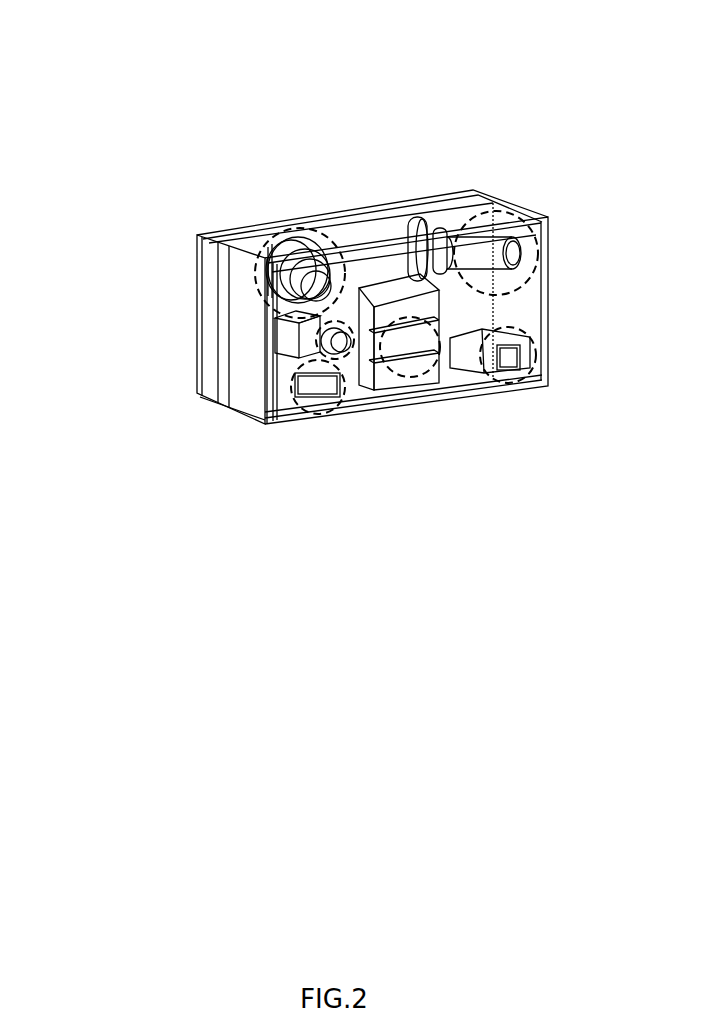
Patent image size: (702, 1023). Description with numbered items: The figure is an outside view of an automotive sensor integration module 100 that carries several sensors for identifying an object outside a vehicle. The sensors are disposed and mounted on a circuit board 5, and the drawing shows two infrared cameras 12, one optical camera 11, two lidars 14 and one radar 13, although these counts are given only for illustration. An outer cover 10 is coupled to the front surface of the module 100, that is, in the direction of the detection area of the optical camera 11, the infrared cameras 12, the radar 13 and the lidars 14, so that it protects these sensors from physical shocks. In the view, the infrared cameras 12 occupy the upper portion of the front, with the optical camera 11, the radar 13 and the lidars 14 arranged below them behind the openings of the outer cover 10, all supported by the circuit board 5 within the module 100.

The automotive sensor integration module 100 is at (549, 37).
The circuit board 5 is at (235, 234).
The outer cover 10 is at (263, 408).
The optical camera 11 is at (292, 330).
The infrared camera 12 is at (462, 213).
The radar 13 is at (424, 376).
The lidar 14 is at (490, 376).